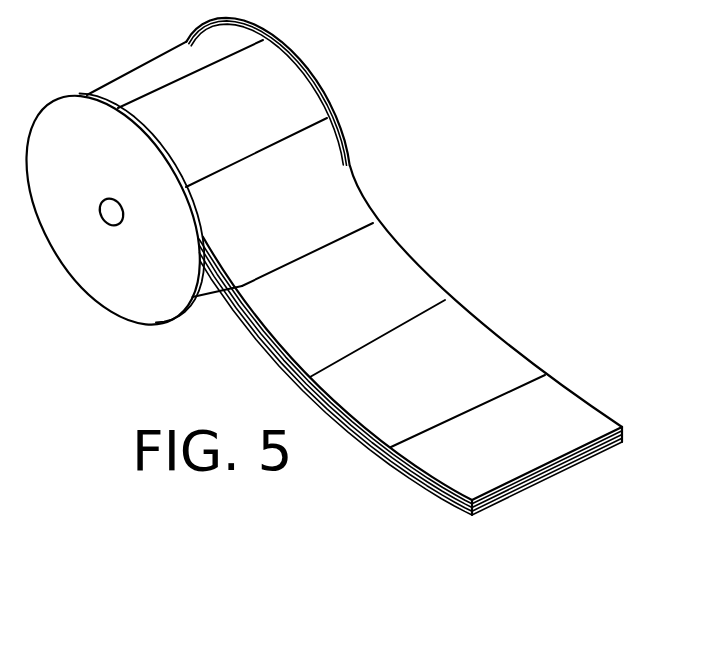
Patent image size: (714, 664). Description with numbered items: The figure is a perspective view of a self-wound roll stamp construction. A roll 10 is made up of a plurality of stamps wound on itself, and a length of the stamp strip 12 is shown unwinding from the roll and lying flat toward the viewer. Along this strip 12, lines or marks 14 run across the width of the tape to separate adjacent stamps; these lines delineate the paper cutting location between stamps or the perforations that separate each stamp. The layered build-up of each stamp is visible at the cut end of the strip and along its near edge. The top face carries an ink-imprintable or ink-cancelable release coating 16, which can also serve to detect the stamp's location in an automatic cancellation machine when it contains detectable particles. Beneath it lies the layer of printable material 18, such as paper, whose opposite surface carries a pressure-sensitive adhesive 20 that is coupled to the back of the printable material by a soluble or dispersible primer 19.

The roll 10 is at (120, 283).
The tape 12 is at (307, 68).
The lines or marks 14 is at (326, 118).
The release coating 16 is at (625, 437).
The layer of printable material 18 is at (607, 452).
The primer 19 is at (577, 463).
The pressure-sensitive adhesive 20 is at (550, 477).